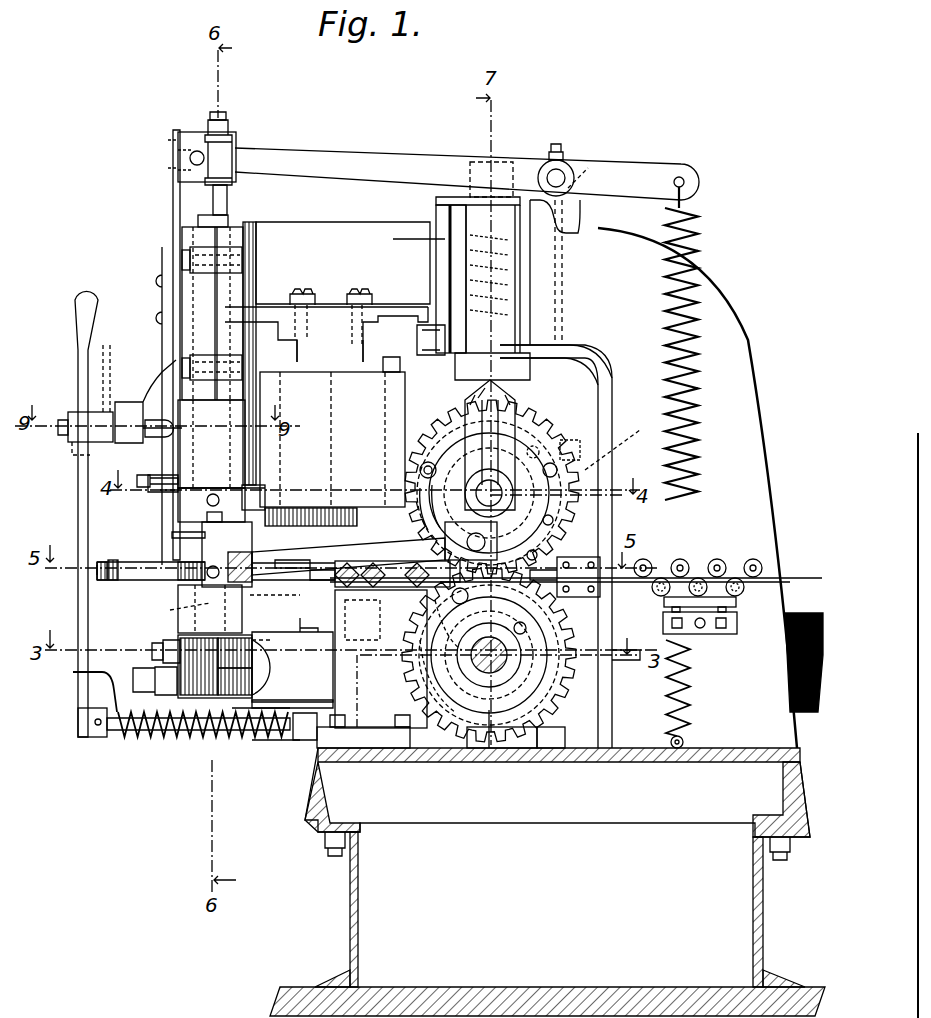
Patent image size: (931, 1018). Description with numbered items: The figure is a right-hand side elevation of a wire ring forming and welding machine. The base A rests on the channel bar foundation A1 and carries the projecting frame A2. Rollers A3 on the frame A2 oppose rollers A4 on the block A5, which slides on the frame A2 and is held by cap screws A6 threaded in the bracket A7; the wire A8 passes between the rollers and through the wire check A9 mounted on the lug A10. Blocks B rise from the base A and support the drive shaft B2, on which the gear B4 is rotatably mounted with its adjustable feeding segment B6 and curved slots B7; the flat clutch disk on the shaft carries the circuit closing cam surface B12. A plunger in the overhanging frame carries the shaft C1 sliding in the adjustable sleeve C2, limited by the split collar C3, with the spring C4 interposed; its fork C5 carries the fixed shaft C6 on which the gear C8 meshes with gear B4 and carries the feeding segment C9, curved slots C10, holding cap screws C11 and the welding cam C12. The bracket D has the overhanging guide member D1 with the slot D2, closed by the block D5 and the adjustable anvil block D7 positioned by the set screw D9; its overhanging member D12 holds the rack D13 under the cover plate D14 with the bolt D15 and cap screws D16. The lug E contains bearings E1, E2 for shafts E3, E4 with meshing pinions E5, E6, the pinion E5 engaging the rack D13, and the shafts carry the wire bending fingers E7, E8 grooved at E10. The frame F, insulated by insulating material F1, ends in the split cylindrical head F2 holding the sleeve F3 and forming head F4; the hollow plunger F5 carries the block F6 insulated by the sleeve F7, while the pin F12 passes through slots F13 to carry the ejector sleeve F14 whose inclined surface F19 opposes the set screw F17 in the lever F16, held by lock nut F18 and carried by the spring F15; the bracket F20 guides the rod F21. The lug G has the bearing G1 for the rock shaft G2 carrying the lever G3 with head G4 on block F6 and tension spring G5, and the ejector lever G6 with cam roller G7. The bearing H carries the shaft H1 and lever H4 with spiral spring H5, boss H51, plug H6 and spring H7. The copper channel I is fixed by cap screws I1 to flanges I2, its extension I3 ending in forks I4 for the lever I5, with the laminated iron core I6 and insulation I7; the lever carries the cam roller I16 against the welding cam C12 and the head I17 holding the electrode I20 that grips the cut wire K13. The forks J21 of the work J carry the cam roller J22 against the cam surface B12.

The base A is at (318, 790).
The channel bar foundation A1 is at (350, 900).
The frame A2 is at (764, 434).
The rollers A3 is at (752, 560).
The rollers A4 is at (658, 595).
The block A5 is at (728, 606).
The cap screws A6 is at (677, 630).
The bracket A7 is at (712, 634).
The wire A8 is at (795, 575).
The wire check A9 is at (578, 565).
The lug A10 is at (540, 518).
The blocks B is at (555, 740).
The drive shaft B2 is at (500, 690).
The gear B4 is at (565, 705).
The adjustable feeding segment B6 is at (470, 730).
The curved slots B7 is at (432, 720).
The circuit closing cam surface B12 is at (470, 760).
The shaft C1 is at (525, 262).
The adjustable sleeve C2 is at (440, 200).
The split collar C3 is at (470, 178).
The spring C4 is at (520, 278).
The fork C5 is at (515, 420).
The fixed shaft C6 is at (428, 462).
The gear C8 is at (560, 445).
The adjustable feeding segment C9 is at (470, 488).
The curved slots C10 is at (480, 488).
The holding cap screws C11 is at (422, 468).
The welding cam C12 is at (570, 455).
The bracket D is at (360, 740).
The overhanging guide member D1 is at (381, 659).
The slot D2 is at (395, 600).
The block D5 is at (392, 560).
The anvil block D7 is at (322, 585).
The set screw D9 is at (378, 625).
The overhanging member D12 is at (320, 700).
The rack D13 is at (300, 680).
The cover plate D14 is at (293, 691).
The bolt D15 is at (155, 645).
The cap screws D16 is at (172, 640).
The lug E is at (292, 665).
The bearing E1 is at (180, 598).
The bearing E2 is at (242, 595).
The shaft E3 is at (175, 605).
The shaft E4 is at (264, 624).
The pinion E5 is at (185, 700).
The pinion E6 is at (228, 700).
The wire bending finger E7 is at (100, 568).
The wire bending finger E8 is at (314, 631).
The grooves E10 is at (100, 565).
The frame F is at (320, 236).
The insulating material F1 is at (410, 233).
The split cylindrical head F2 is at (190, 236).
The sleeve F3 is at (248, 222).
The forming head F4 is at (202, 560).
The hollow plunger F5 is at (228, 210).
The block F6 is at (183, 155).
The sleeve F7 is at (210, 130).
The pin F12 is at (212, 492).
The slots F13 is at (208, 504).
The ejector sleeve F14 is at (205, 518).
The spring F15 is at (172, 192).
The lever F16 is at (163, 292).
The set screw F17 is at (175, 468).
The lock nut F18 is at (160, 472).
The inclined surface F19 is at (175, 494).
The bracket F20 is at (176, 350).
The rod F21 is at (140, 408).
The lug G is at (566, 213).
The bearing G1 is at (582, 166).
The rock shaft G2 is at (548, 170).
The lever G3 is at (330, 160).
The head G4 is at (224, 155).
The tension spring G5 is at (695, 245).
The ejector lever G6 is at (560, 372).
The cam roller G7 is at (611, 441).
The bearing H is at (302, 742).
The shaft H1 is at (108, 740).
The lever H4 is at (78, 698).
The spiral spring H5 is at (150, 735).
The plug H6 is at (106, 400).
The spring H7 is at (78, 448).
The boss H51 is at (78, 412).
The copper channel I is at (325, 330).
The cap screws I1 is at (310, 315).
The flanges I2 is at (292, 330).
The extension I3 is at (314, 557).
The forks I4 is at (282, 551).
The lever I5 is at (380, 545).
The laminated iron core I6 is at (318, 400).
The insulation I7 is at (335, 508).
The cam roller I16 is at (495, 550).
The head I17 is at (200, 536).
The electrode I20 is at (212, 582).
The work piece J is at (804, 648).
The forks J21 is at (612, 652).
The cam roller J22 is at (665, 680).
The wire K13 is at (125, 562).